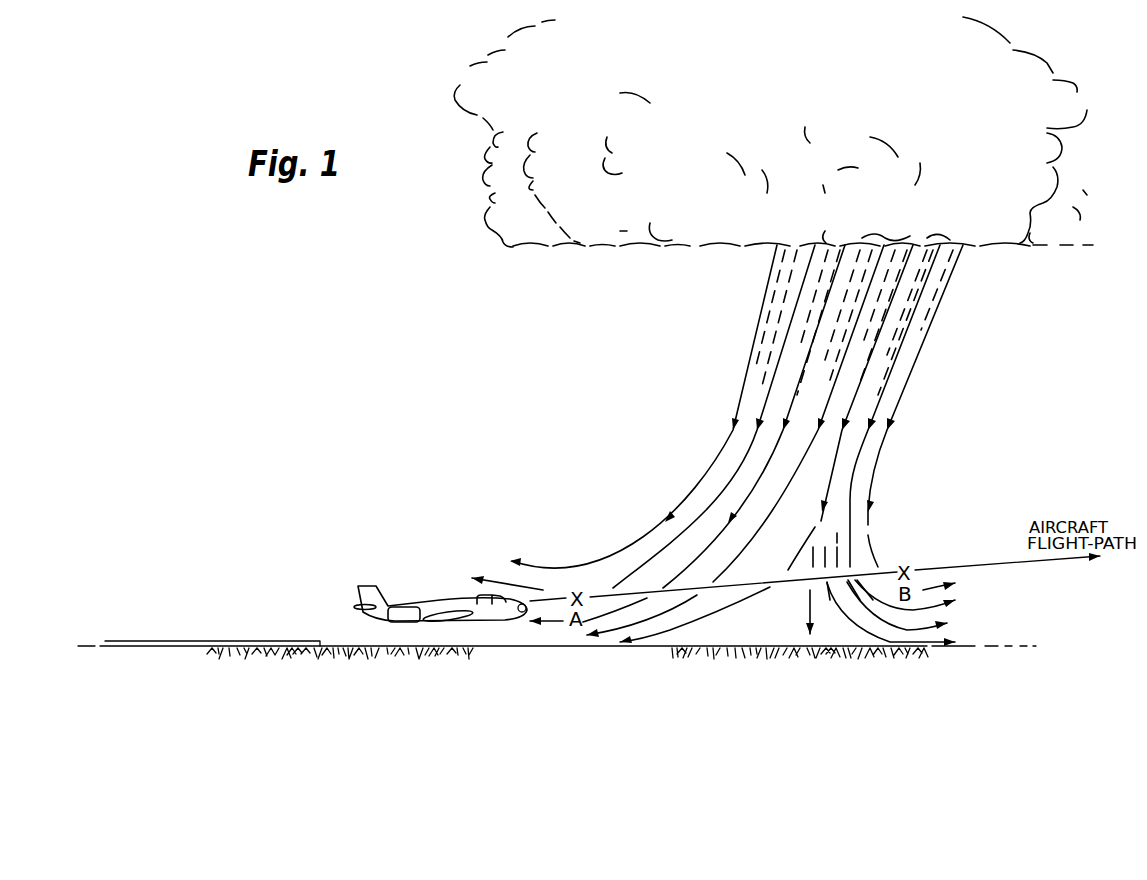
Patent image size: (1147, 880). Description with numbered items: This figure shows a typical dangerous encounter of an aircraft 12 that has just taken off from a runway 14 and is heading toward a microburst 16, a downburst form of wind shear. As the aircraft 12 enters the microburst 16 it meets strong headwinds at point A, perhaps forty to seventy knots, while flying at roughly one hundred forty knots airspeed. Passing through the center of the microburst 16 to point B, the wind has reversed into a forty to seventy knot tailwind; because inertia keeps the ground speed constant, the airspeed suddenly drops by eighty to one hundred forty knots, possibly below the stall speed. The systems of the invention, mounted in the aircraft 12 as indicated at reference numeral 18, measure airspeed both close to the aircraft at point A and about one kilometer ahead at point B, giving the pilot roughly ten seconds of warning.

The aircraft 12 is at (437, 600).
The runway 14 is at (288, 643).
The microburst 16 is at (849, 320).
The system of the present invention 18 is at (522, 606).